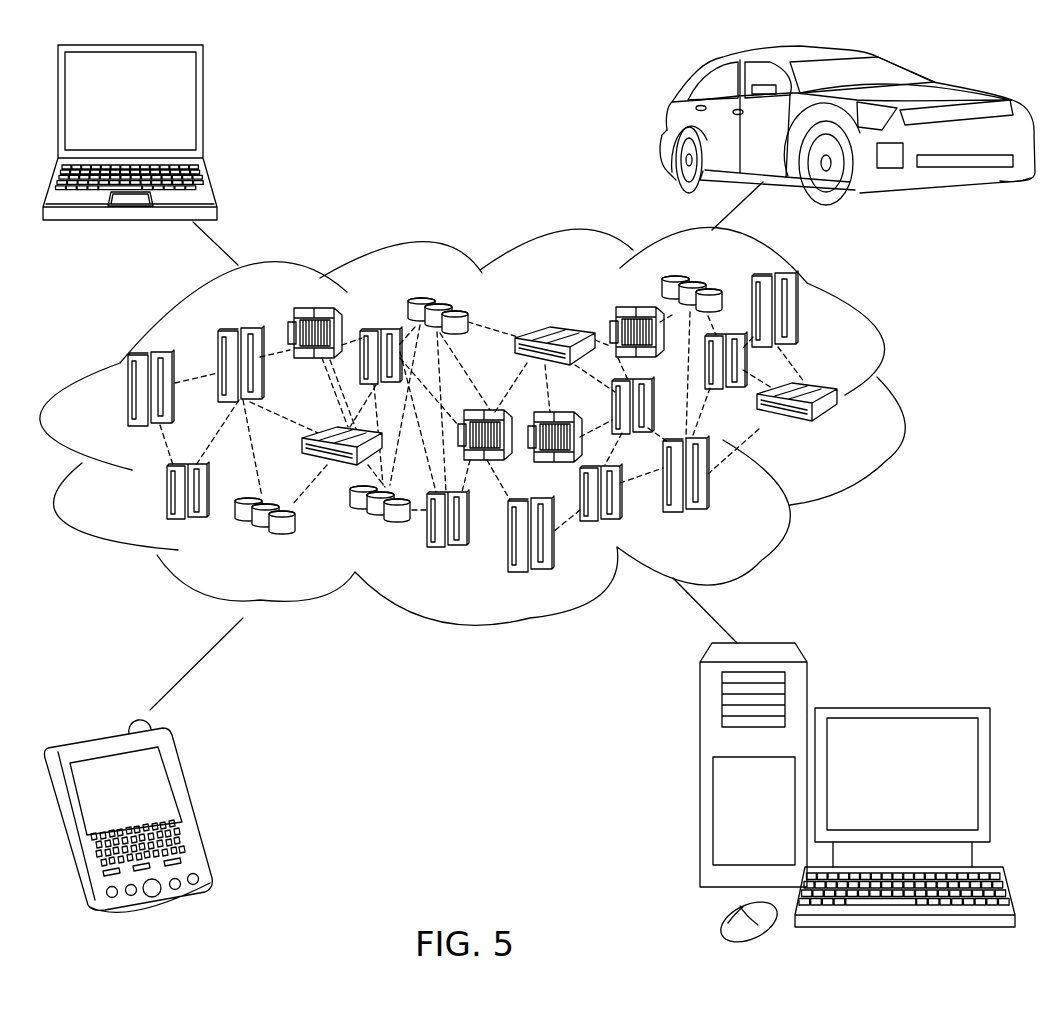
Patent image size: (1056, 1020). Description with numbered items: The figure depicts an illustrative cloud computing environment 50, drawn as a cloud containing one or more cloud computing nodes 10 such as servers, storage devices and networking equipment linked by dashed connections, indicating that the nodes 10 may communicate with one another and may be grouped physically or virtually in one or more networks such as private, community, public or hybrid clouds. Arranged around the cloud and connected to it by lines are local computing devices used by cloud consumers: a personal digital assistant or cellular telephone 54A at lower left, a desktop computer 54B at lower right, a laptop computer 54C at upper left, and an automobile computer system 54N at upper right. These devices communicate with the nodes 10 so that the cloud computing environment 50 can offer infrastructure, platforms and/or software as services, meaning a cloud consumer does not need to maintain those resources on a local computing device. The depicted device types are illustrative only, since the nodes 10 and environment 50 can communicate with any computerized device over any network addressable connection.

The cloud computing nodes 10 is at (837, 430).
The cloud computing environment 50 is at (902, 400).
The personal digital assistant (PDA) or cellular telephone 54A is at (190, 805).
The desktop computer 54B is at (898, 708).
The laptop computer 54C is at (203, 110).
The automobile computer system 54N is at (667, 127).